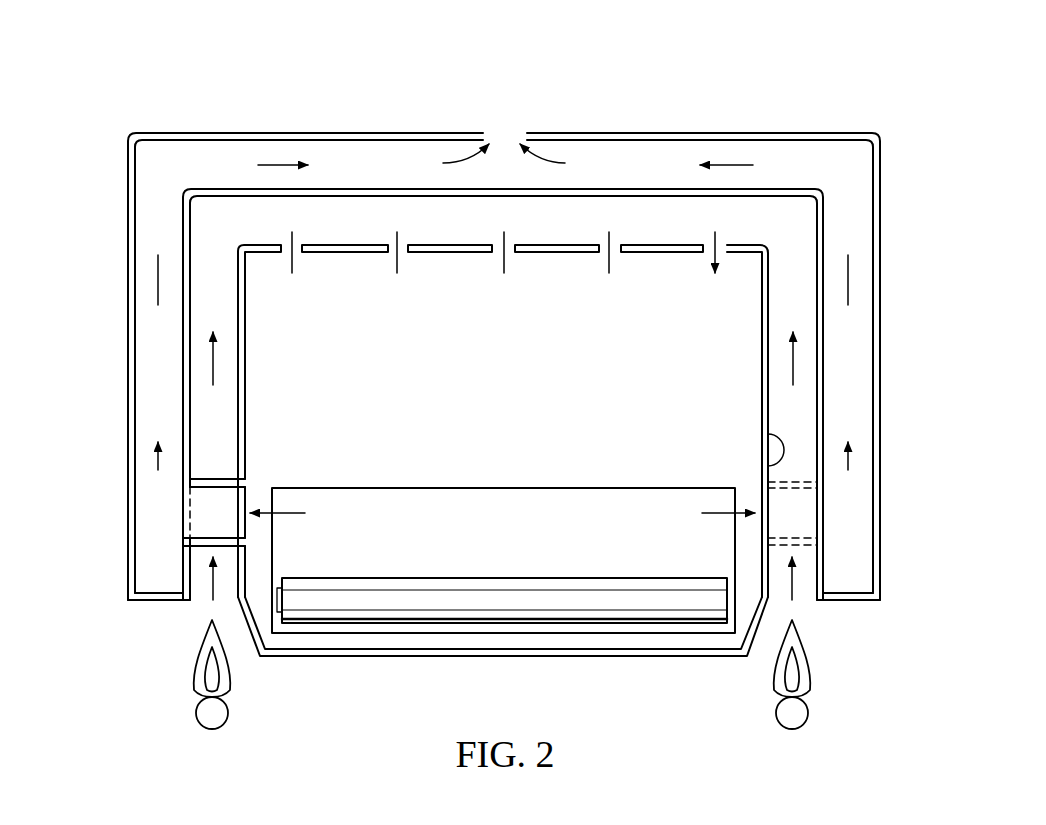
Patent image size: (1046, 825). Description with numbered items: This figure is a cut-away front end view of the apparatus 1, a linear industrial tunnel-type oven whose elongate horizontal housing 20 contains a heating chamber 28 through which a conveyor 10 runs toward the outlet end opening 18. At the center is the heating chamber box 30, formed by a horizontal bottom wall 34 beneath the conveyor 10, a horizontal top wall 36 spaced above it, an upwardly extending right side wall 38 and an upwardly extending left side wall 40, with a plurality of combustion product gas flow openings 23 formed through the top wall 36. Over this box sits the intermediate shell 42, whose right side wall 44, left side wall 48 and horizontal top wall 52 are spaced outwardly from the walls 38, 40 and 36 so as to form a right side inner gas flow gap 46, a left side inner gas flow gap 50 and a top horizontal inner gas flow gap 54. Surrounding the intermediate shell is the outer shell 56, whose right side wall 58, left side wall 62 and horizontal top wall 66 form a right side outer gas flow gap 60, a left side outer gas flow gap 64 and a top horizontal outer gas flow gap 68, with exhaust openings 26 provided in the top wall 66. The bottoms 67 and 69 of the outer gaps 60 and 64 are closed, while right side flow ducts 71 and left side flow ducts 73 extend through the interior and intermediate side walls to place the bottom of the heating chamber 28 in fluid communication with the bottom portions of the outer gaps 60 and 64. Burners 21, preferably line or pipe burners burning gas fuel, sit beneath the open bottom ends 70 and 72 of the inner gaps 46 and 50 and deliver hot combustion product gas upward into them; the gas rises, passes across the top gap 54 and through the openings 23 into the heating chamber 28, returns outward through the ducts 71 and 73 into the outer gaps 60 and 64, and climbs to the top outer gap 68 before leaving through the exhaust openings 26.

The apparatus 1 is at (101, 94).
The housing 20 is at (879, 105).
The horizontal top wall 36 is at (264, 245).
The horizontal top wall 66 is at (310, 133).
The combustion product gas exhaust openings 26 is at (505, 140).
The top horizontal outer combustion product gas flow gap 68 is at (688, 150).
The horizontal top wall 52 is at (770, 190).
The combustion product gas flow openings 23 is at (611, 240).
The top horizontal inner combustion product gas flow gap 54 is at (473, 222).
The heating chamber 28 is at (488, 386).
The left side wall 48 is at (190, 300).
The left side inner combustion product gas flow gap 50 is at (232, 362).
The left side wall 40 is at (245, 414).
The intermediate shell 42 is at (183, 340).
The left side outer combustion product gas flow gap 64 is at (145, 395).
The left side wall 62 is at (128, 458).
The right side outer combustion product gas flow gap 60 is at (858, 330).
The right side wall 44 is at (817, 290).
The right side inner combustion product gas flow gap 46 is at (773, 352).
The heating chamber box 30 is at (766, 398).
The right side wall 38 is at (768, 452).
The right side wall 58 is at (880, 428).
The outer shell 56 is at (880, 510).
The left side flow ducts 73 is at (195, 512).
The right side flow ducts 71 is at (808, 512).
The outlet end opening 18 is at (488, 548).
The conveyor 10 is at (358, 578).
The bottom 69 is at (155, 600).
The open bottom end 72 is at (200, 598).
The horizontal bottom wall 34 is at (325, 658).
The open bottom end 70 is at (805, 598).
The bottom 67 is at (850, 600).
The burners 21 is at (196, 712).